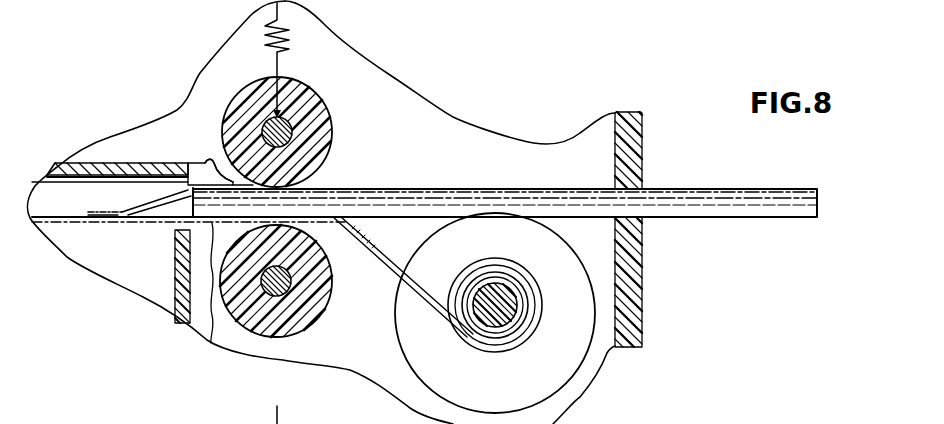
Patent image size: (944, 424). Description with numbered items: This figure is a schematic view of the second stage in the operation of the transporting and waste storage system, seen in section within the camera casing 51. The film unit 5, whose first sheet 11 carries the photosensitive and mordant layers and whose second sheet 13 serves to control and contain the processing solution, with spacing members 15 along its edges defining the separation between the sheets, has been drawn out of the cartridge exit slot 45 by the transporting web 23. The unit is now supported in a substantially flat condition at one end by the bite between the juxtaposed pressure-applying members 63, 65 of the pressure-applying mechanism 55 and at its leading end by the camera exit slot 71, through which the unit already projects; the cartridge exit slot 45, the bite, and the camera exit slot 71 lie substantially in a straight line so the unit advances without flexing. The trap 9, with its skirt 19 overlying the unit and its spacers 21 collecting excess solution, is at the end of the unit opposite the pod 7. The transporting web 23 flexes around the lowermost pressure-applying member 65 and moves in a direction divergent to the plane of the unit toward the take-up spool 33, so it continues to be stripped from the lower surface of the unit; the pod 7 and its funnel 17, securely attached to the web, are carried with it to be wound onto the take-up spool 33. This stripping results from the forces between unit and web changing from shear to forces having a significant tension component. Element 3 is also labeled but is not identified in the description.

The guide bar 3 is at (114, 156).
The film unit 5 is at (400, 135).
The pod 7 is at (485, 258).
The trap 9 is at (158, 190).
The first sheet 11 is at (383, 208).
The second sheet 13 is at (404, 193).
The spacing members 15 is at (450, 198).
The funnel 17 is at (457, 286).
The skirt 19 is at (130, 210).
The spacers 21 is at (160, 222).
The transporting web 23 is at (73, 222).
The take-up spool 33 is at (427, 353).
The cartridge exit slot 45 is at (221, 172).
The casing 51 is at (453, 127).
The pressure-applying mechanism 55 is at (222, 172).
The pressure-applying member 63 is at (305, 95).
The pressure-applying member 65 is at (252, 322).
The camera exit slot 71 is at (642, 183).